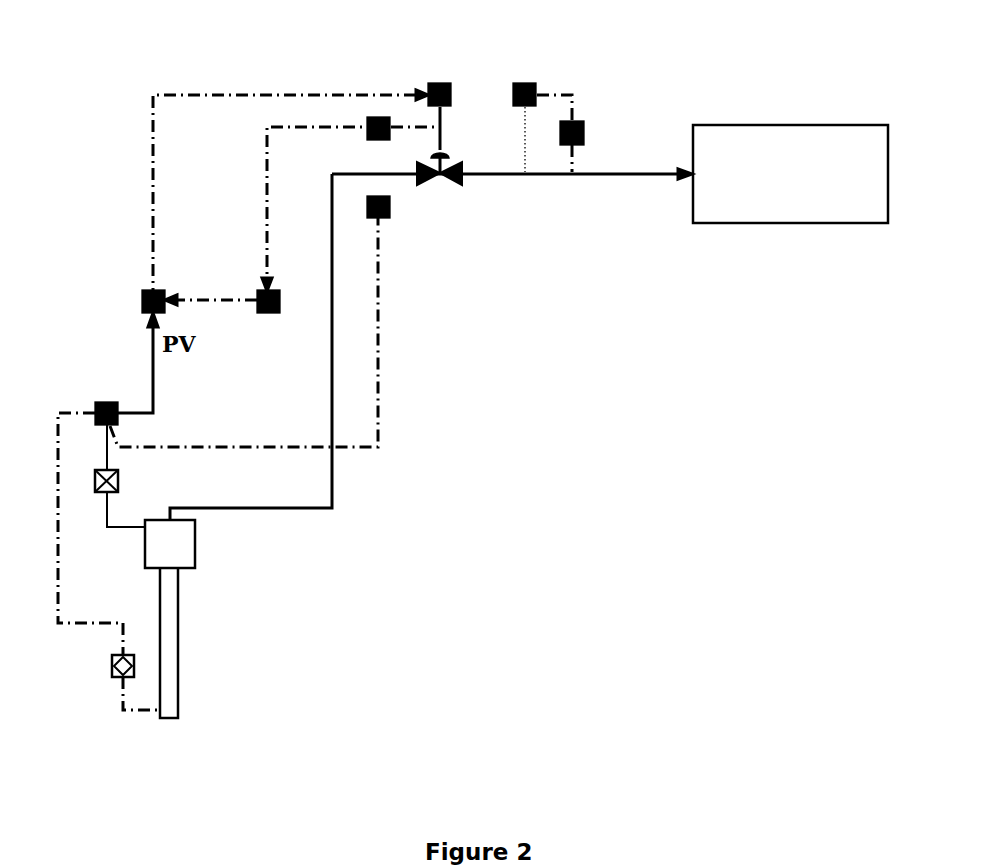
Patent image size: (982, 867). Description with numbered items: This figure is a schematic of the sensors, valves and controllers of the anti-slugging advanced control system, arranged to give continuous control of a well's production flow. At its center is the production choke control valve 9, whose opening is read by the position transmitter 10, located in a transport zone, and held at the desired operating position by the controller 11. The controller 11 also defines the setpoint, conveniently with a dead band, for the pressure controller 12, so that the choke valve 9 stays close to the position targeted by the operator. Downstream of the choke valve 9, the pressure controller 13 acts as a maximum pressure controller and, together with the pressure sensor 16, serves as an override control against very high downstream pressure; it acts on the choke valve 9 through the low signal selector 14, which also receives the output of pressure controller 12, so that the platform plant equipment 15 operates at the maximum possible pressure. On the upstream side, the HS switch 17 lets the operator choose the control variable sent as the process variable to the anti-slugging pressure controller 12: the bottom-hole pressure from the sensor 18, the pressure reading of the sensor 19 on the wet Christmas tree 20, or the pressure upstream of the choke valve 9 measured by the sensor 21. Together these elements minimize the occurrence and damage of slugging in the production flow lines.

The production choke control valve 9 is at (458, 187).
The position transmitter 10 is at (362, 140).
The controller ZIC-01 11 is at (273, 315).
The pressure controller PIC-01 12 is at (142, 287).
The pressure controller PIC-02 13 is at (530, 80).
The low signal selector 14 is at (443, 80).
The platform plant equipment 15 is at (780, 120).
The pressure sensor PT-02 16 is at (587, 120).
The HS switch 17 is at (102, 397).
The bottom-hole pressure sensor PDG 18 is at (108, 672).
The pressure sensor TPT 19 is at (122, 480).
The wet Christmas tree 20 is at (200, 548).
The pressure sensor PT-01 21 is at (390, 223).